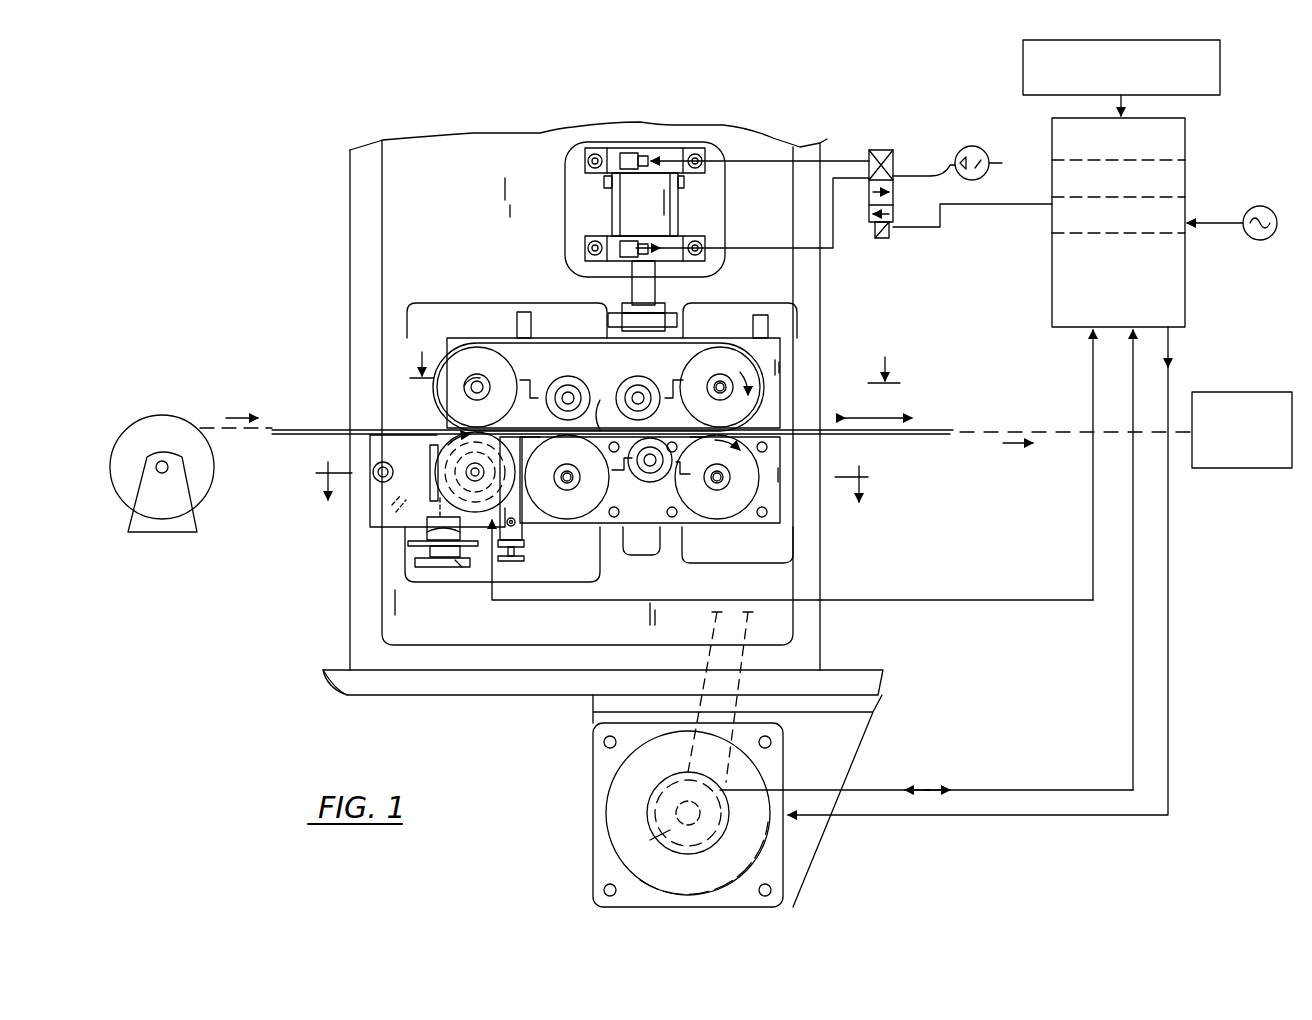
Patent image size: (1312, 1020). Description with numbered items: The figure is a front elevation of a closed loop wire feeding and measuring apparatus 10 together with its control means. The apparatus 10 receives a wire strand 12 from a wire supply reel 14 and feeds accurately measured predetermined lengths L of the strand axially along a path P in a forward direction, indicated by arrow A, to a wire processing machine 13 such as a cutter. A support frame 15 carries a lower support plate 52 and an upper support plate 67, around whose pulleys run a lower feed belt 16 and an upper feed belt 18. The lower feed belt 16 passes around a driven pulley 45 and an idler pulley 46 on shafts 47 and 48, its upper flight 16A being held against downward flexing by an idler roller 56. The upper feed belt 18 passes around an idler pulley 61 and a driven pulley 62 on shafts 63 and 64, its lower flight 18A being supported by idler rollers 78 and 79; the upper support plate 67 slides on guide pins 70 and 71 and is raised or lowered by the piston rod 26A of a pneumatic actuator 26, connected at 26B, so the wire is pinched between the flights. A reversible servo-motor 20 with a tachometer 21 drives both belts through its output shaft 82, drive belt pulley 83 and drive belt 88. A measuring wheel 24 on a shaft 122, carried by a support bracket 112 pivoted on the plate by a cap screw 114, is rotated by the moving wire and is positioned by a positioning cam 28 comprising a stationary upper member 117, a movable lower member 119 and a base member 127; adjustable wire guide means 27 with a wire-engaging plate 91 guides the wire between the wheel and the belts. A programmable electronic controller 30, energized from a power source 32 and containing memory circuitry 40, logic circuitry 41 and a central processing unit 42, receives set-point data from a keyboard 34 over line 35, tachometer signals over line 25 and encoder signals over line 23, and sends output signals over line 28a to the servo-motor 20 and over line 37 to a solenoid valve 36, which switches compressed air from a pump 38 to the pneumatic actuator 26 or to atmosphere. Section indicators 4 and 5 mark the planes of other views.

The closed loop wire feeding and measuring apparatus 10 is at (888, 283).
The wire strand 12 is at (322, 403).
The wire processing machine 13 is at (1252, 366).
The wire supply reel 14 is at (214, 468).
The support frame 15 is at (860, 660).
The lower feed belt 16 is at (700, 528).
The upper flight of lower feed belt 16A is at (692, 440).
The upper feed belt 18 is at (753, 362).
The lower flight of upper feed belt 18A is at (602, 418).
The servo-motor 20 is at (608, 820).
The tachometer 21 is at (725, 820).
The encoder signal line 23 is at (998, 578).
The measuring wheel 24 is at (430, 478).
The tachometer signal line 25 is at (1005, 790).
The pneumatic actuator 26 is at (692, 212).
The piston rod 26A is at (660, 283).
The piston rod connection 26B is at (626, 312).
The wire guide means 27 is at (526, 537).
The positioning cam 28 is at (432, 551).
The servo-motor control line 28a is at (1170, 720).
The programmable electronic controller 30 is at (1188, 128).
The electric power source 32 is at (1280, 192).
The keyboard 34 is at (1222, 58).
The input device signal line 35 is at (1121, 103).
The solenoid valve 36 is at (883, 150).
The solenoid valve control line 37 is at (988, 206).
The pump 38 is at (978, 148).
The memory circuitry 40 is at (1131, 187).
The logic circuitry 41 is at (1131, 228).
The central processing unit 42 is at (1131, 286).
The driven pulley 45 is at (728, 508).
The idler pulley 46 is at (579, 506).
The shaft 47 is at (730, 480).
The shaft 48 is at (575, 472).
The lower support plate 52 is at (783, 472).
The idler roller 56 is at (650, 483).
The idler pulley 61 is at (729, 371).
The driven pulley 62 is at (486, 371).
The shaft 63 is at (733, 385).
The shaft 64 is at (466, 387).
The upper support plate 67 is at (780, 367).
The guide pin 70 is at (760, 315).
The guide pin 71 is at (522, 312).
The idler roller 78 is at (650, 378).
The idler roller 79 is at (573, 378).
The output shaft 82 is at (668, 833).
The drive belt pulley 83 is at (650, 806).
The drive belt 88 is at (665, 770).
The wire-engaging plate 91 is at (528, 434).
The support bracket 112 is at (392, 512).
The cap screw 114 is at (374, 470).
The upper member 117 is at (427, 530).
The lower member 119 is at (420, 562).
The shaft 122 is at (472, 470).
The base member 127 is at (455, 568).
The section line 5 is at (656, 358).
The section line 4 is at (586, 482).
The predetermined length L is at (880, 402).
The path P is at (1044, 432).
The forward direction arrow A is at (1012, 447).